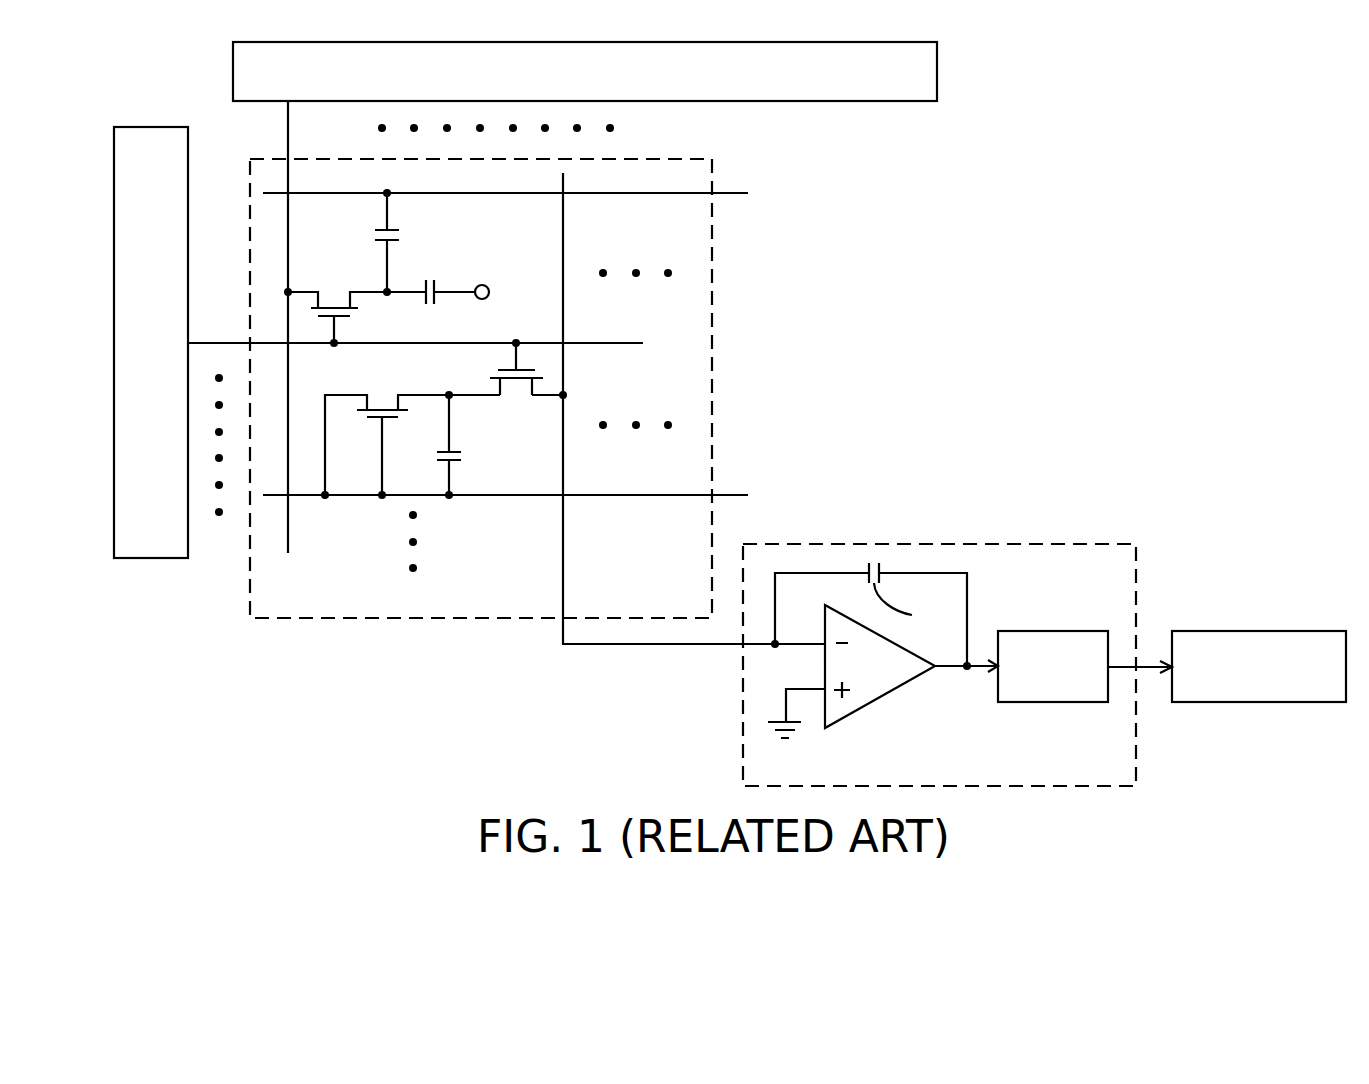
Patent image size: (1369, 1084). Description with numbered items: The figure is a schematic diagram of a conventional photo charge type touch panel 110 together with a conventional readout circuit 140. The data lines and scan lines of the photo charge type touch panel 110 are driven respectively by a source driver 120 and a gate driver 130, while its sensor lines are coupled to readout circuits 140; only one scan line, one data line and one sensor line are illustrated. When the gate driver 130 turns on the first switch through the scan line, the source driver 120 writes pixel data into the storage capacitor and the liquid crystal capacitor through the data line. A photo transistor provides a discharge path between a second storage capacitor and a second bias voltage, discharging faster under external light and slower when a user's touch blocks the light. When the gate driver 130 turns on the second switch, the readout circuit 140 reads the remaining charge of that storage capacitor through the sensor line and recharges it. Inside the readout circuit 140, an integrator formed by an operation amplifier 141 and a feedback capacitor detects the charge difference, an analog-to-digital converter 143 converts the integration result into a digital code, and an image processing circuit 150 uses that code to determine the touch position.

The photo charge type touch panel 110 is at (712, 303).
The source driver 120 is at (937, 73).
The gate driver 130 is at (150, 127).
The readout circuit 140 is at (939, 643).
The operation amplifier 141 is at (880, 698).
The analog-to-digital converter 143 is at (1053, 631).
The image processing circuit 150 is at (1253, 631).